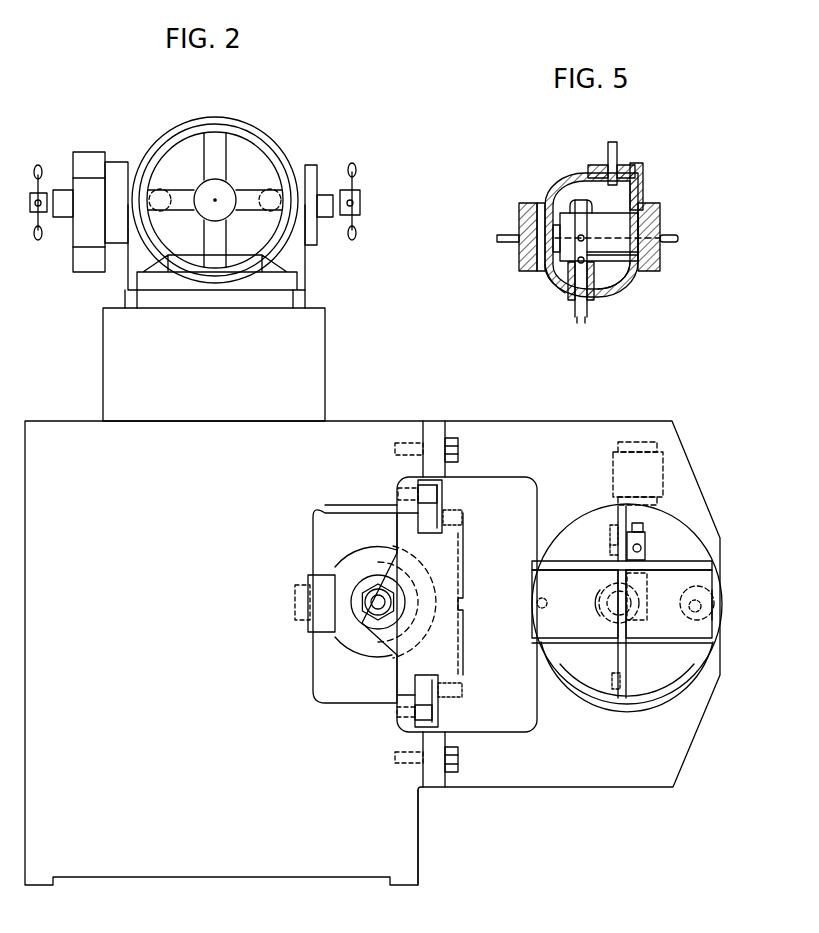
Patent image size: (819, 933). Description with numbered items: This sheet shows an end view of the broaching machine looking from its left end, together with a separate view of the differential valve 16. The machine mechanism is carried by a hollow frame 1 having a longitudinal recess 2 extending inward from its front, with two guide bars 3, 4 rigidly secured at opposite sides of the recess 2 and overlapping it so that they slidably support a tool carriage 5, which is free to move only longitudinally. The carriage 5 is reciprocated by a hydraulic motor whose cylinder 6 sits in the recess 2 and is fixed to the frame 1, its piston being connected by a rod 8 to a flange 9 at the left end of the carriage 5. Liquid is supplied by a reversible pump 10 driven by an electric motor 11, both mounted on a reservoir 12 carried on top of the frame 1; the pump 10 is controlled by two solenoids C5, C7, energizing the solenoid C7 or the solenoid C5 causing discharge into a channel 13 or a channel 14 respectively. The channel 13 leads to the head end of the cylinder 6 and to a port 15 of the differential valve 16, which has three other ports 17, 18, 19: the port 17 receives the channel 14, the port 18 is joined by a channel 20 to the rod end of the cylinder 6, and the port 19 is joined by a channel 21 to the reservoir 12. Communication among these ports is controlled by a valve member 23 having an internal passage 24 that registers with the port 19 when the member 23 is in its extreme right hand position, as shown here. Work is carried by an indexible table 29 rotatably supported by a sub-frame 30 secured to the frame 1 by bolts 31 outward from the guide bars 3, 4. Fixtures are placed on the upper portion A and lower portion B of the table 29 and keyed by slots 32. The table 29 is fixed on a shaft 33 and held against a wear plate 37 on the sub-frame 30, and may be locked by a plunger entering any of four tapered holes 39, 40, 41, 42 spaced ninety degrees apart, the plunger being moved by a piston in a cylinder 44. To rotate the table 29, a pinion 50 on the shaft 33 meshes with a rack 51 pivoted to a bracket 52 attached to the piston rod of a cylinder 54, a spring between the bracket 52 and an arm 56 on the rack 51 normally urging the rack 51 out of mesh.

In FIG. 2, the hollow frame 1 is at (397, 845).
In FIG. 2, the longitudinal recess 2 is at (358, 692).
In FIG. 2, the guide bar 3 is at (427, 517).
In FIG. 2, the guide bar 4 is at (422, 695).
In FIG. 2, the tool carriage 5 is at (465, 648).
In FIG. 2, the cylinder 6 is at (348, 643).
In FIG. 2, the rod 8 is at (377, 603).
In FIG. 2, the flange 9 is at (383, 653).
In FIG. 2, the reversible pump 10 is at (283, 140).
In FIG. 2, the electric motor 11 is at (245, 132).
In FIG. 2, the reservoir 12 is at (214, 364).
In FIG. 5, the channel 13 is at (673, 242).
In FIG. 5, the channel 14 is at (510, 240).
In FIG. 5, the port 15 is at (607, 231).
In FIG. 5, the differential valve 16 is at (550, 132).
In FIG. 5, the port 17 is at (527, 223).
In FIG. 5, the port 18 is at (603, 170).
In FIG. 5, the port 19 is at (575, 297).
In FIG. 5, the channel 20 is at (612, 152).
In FIG. 5, the channel 21 is at (586, 317).
In FIG. 5, the valve member 23 is at (637, 288).
In FIG. 5, the internal passage 24 is at (642, 192).
In FIG. 2, the indexible table 29 is at (571, 688).
In FIG. 2, the sub-frame 30 is at (600, 777).
In FIG. 2, the bolts 31 is at (453, 448).
In FIG. 2, the slots 32 is at (658, 568).
In FIG. 2, the shaft 33 is at (599, 619).
In FIG. 2, the wear plate 37 is at (613, 707).
In FIG. 2, the tapered hole 39 is at (694, 609).
In FIG. 2, the tapered hole 40 is at (612, 680).
In FIG. 2, the tapered hole 41 is at (545, 600).
In FIG. 2, the tapered hole 42 is at (610, 529).
In FIG. 2, the cylinder 44 is at (714, 594).
In FIG. 2, the pinion 50 is at (601, 598).
In FIG. 2, the rack 51 is at (640, 584).
In FIG. 2, the bracket 52 is at (644, 542).
In FIG. 2, the cylinder 54 is at (632, 470).
In FIG. 2, the arm 56 is at (609, 551).
In FIG. 2, the upper portion A is at (653, 530).
In FIG. 2, the lower portion B is at (648, 680).
In FIG. 2, the solenoid C5 is at (93, 260).
In FIG. 2, the solenoid C7 is at (85, 162).